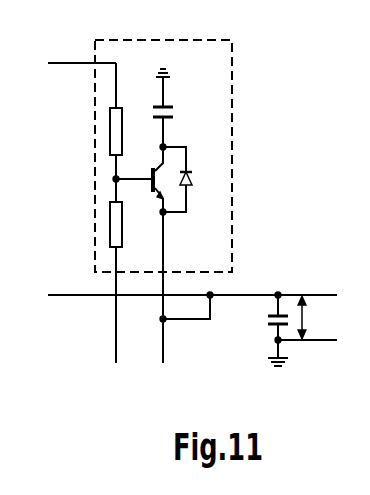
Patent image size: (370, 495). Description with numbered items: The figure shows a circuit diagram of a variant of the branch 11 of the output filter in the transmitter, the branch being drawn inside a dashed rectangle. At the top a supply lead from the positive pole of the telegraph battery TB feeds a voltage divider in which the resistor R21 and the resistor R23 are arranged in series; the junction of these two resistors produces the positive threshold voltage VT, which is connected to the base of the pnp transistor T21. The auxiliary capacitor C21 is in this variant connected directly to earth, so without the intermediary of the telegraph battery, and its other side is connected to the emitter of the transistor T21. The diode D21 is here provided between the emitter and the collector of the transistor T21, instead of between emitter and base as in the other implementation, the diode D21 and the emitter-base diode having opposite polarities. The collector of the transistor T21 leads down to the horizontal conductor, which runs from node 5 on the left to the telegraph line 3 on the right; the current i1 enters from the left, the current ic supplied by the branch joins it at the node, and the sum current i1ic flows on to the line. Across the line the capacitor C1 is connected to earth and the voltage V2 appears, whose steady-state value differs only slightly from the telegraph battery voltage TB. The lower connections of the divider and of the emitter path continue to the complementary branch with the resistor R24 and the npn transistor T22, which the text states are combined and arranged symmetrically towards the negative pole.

The branch 11 is at (233, 100).
The telegraph battery voltage TB is at (77, 52).
The threshold voltage VT is at (114, 179).
The resistor R21 is at (123, 113).
The resistor R23 is at (122, 216).
The auxiliary capacitor C21 is at (170, 108).
The pnp transistor T21 is at (152, 170).
The diode D21 is at (191, 181).
The npn transistor T22 is at (171, 306).
The resistor R24 is at (112, 388).
The node 5 is at (190, 308).
The telegraph line 3 is at (315, 327).
The capacitor C1 is at (273, 333).
The voltage V2 is at (311, 318).
The current i1 is at (50, 285).
The current ic is at (180, 330).
The sum current i1+ic i1ic is at (283, 282).